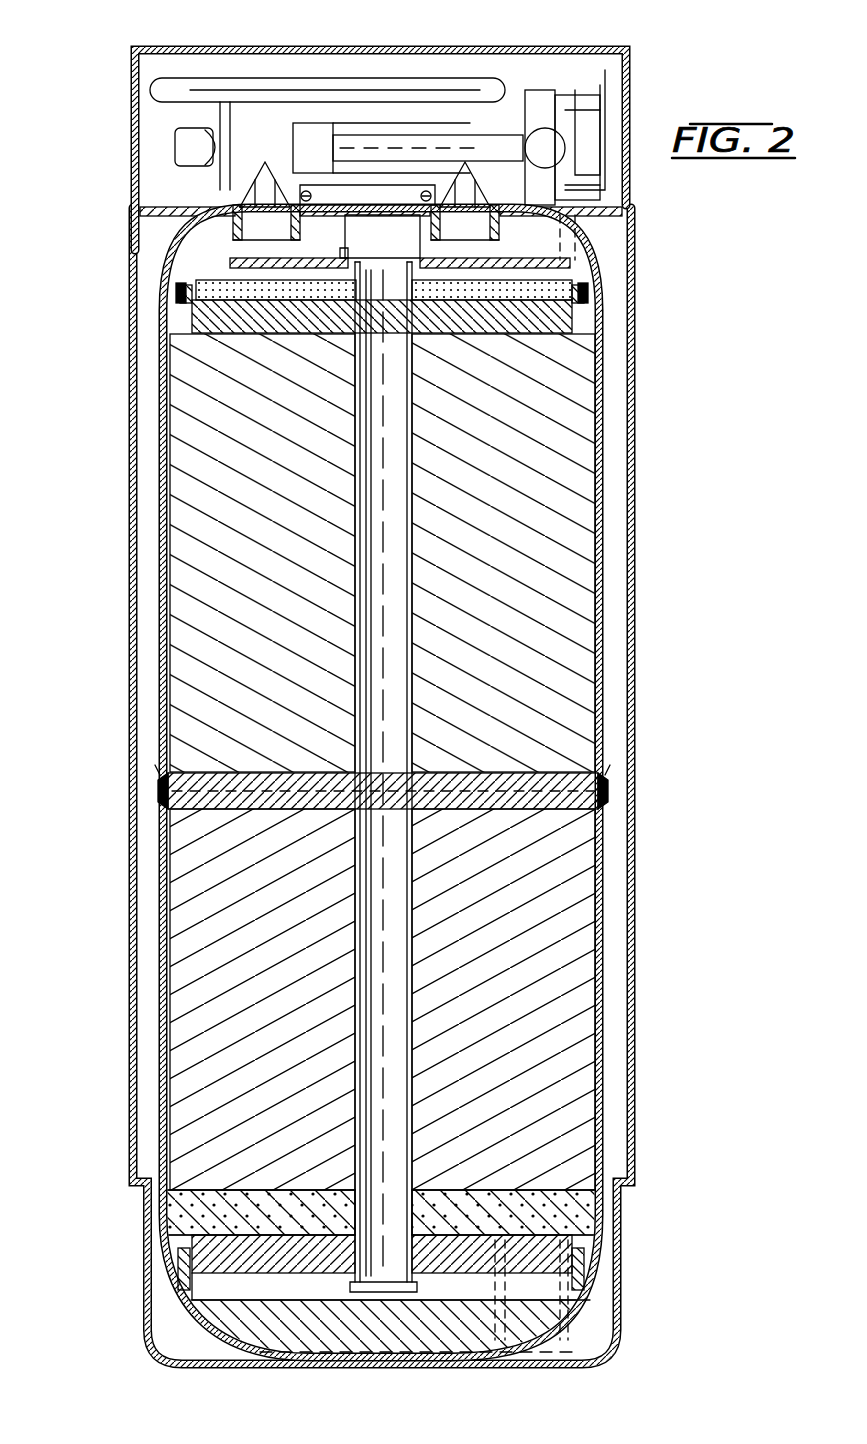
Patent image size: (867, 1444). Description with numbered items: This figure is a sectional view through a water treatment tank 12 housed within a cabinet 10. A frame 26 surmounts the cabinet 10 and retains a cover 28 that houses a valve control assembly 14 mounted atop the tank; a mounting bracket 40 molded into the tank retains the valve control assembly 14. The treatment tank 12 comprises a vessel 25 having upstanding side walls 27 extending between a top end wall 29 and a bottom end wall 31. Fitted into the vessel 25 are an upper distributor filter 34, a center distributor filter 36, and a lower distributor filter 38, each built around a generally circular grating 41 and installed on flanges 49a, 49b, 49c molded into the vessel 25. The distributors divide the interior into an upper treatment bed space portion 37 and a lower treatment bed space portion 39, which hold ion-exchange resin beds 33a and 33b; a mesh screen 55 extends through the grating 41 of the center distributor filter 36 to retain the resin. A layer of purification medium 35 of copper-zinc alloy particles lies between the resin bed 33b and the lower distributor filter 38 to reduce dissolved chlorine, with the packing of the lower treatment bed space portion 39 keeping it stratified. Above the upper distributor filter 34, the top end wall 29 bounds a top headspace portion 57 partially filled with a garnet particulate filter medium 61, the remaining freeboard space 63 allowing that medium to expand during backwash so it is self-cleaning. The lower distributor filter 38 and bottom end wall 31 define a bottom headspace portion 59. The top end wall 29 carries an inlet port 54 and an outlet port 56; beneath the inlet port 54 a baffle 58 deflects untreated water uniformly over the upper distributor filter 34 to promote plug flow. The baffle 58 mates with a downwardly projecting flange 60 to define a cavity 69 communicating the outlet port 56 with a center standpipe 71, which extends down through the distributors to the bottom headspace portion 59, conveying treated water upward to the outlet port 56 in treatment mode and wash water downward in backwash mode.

The cabinet 10 is at (634, 702).
The treatment tank 12 is at (171, 236).
The valve control assembly 14 is at (400, 115).
The vessel 25 is at (156, 338).
The frame 26 is at (632, 232).
The side walls 27 is at (602, 556).
The cover 28 is at (631, 70).
The top end wall 29 is at (600, 254).
The bottom end wall 31 is at (560, 1312).
The resin bed 33a is at (566, 467).
The resin bed 33b is at (556, 966).
The upper distributor filter 34 is at (560, 346).
The layer of purification medium 35 is at (596, 1162).
The center distributor filter 36 is at (590, 835).
The upper treatment bed space portion 37 is at (382, 553).
The lower distributor filter 38 is at (560, 1205).
The lower treatment bed space portion 39 is at (382, 999).
The mounting bracket 40 is at (345, 195).
The grating 41 is at (590, 809).
The flange 49a is at (590, 300).
The flange 49b is at (600, 786).
The flange 49c is at (585, 1266).
The inlet port 54 is at (258, 228).
The mesh screen 55 is at (598, 770).
The outlet port 56 is at (490, 228).
The top headspace portion 57 is at (535, 265).
The baffle 58 is at (187, 270).
The bottom headspace portion 59 is at (391, 1288).
The downwardly projecting flange 60 is at (370, 229).
The particulate filter medium 61 is at (580, 285).
The freeboard space 63 is at (530, 237).
The cavity 69 is at (380, 237).
The center standpipe 71 is at (415, 506).